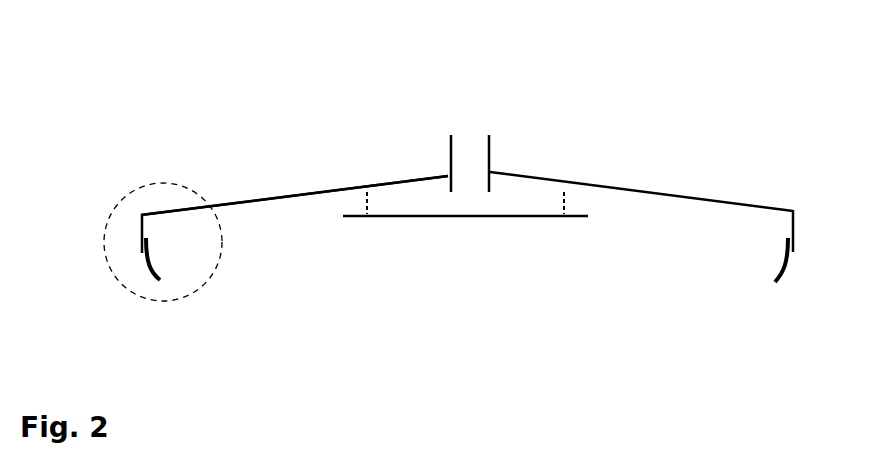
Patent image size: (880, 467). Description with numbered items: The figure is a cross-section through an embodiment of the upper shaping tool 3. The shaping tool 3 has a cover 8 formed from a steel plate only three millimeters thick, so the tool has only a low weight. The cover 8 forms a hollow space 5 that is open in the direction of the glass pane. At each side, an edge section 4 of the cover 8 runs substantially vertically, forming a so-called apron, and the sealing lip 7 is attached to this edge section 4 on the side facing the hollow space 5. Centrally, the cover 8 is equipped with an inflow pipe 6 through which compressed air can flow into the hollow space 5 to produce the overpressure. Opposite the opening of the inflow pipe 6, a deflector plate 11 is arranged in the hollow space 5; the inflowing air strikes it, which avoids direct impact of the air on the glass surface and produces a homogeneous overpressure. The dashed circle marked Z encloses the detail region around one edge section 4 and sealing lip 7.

The upper shaping tool 3 is at (692, 145).
The edge section 4 is at (138, 232).
The hollow space 5 is at (282, 222).
The inflow pipe 6 is at (477, 159).
The sealing lip 7 is at (160, 280).
The cover 8 is at (320, 193).
The deflector plate 11 is at (523, 218).
The detail region Z is at (213, 275).